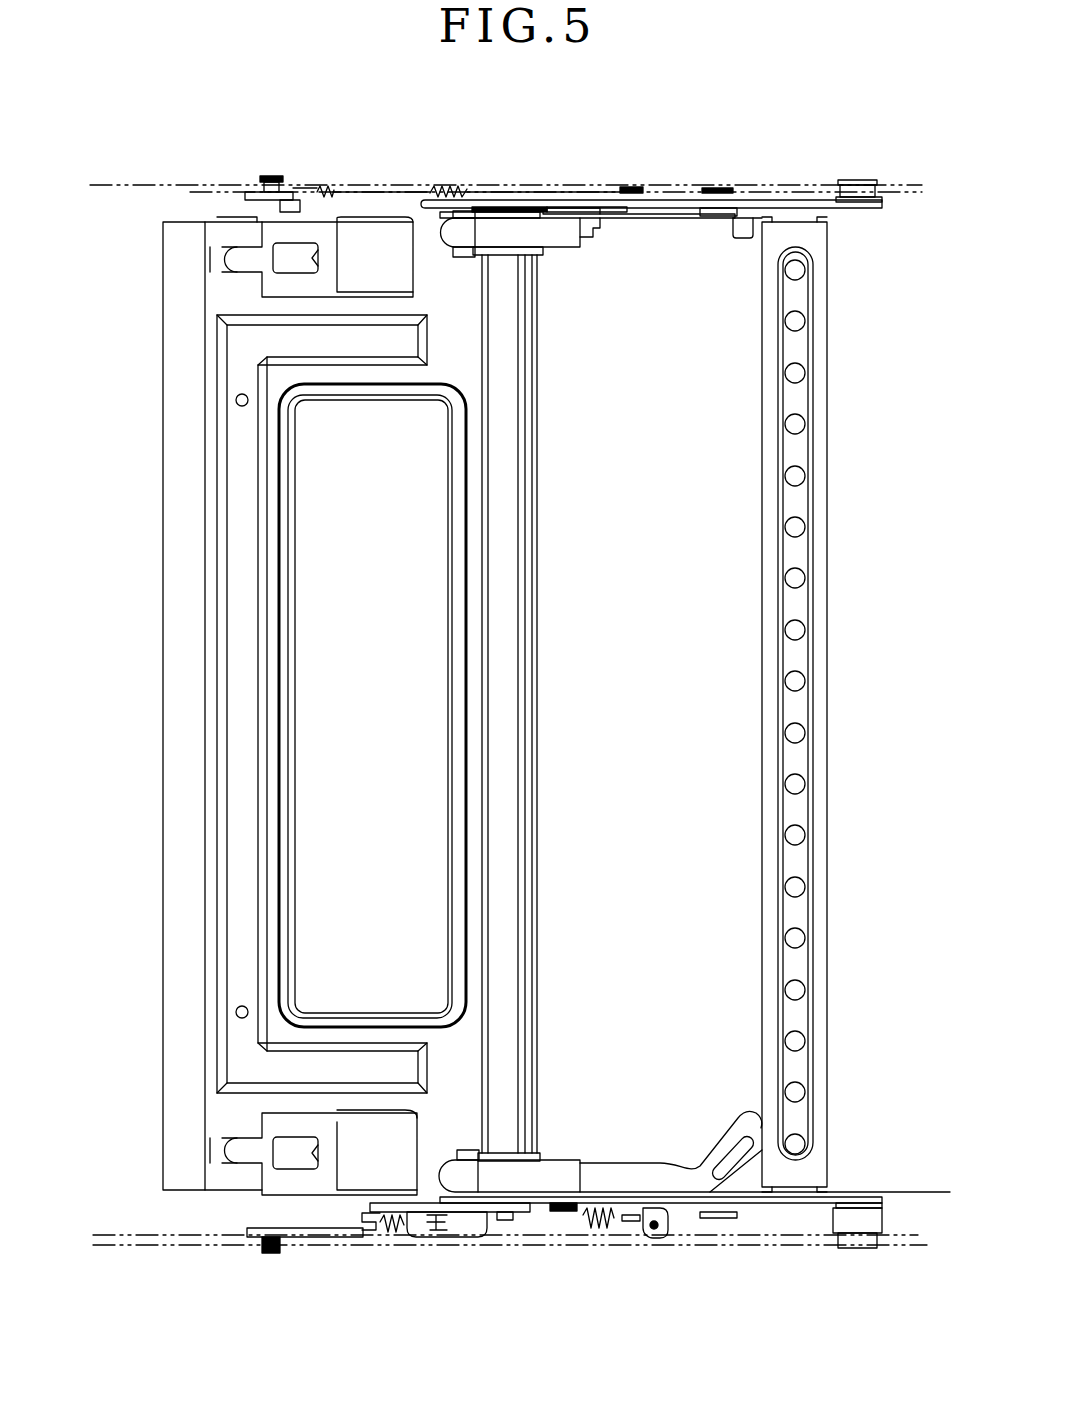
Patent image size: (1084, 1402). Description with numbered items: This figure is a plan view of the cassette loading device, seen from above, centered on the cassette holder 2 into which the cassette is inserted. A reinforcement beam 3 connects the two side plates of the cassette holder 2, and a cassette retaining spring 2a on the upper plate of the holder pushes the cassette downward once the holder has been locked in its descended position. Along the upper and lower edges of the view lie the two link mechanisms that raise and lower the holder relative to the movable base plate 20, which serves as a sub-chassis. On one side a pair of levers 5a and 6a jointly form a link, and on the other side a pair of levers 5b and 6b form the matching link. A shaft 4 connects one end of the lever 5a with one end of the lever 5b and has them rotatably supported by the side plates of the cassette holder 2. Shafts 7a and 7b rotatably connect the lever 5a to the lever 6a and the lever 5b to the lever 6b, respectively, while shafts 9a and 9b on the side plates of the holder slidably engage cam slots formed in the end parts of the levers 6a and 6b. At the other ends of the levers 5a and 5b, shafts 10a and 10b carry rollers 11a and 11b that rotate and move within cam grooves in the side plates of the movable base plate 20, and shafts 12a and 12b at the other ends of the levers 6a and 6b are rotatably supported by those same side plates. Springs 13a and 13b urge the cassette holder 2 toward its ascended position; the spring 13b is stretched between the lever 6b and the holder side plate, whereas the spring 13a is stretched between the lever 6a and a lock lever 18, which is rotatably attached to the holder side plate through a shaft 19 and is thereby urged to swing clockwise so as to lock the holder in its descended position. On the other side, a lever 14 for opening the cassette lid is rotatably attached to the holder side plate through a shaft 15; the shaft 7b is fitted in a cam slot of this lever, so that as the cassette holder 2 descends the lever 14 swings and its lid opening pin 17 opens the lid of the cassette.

The cassette holder 2 is at (185, 511).
The cassette retaining spring 2a is at (232, 258).
The reinforcement beam 3 is at (818, 631).
The shaft 4 is at (503, 590).
The lever 5a is at (607, 1196).
The lever 5b is at (630, 219).
The lever 6a is at (572, 1212).
The lever 6b is at (567, 198).
The shaft 7a is at (633, 1220).
The shaft 7b is at (628, 186).
The shaft 9a is at (722, 1219).
The shaft 9b is at (716, 187).
The shaft 10a is at (868, 1248).
The shaft 10b is at (868, 180).
The roller 11a is at (856, 1244).
The roller 11b is at (852, 186).
The shaft 12a is at (274, 1253).
The shaft 12b is at (272, 176).
The spring 13a is at (584, 1215).
The spring 13b is at (447, 186).
The lever 14 is at (515, 200).
The shaft 15 is at (438, 219).
The lid opening pin 17 is at (742, 236).
The lock lever 18 is at (385, 1237).
The shaft 19 is at (437, 1230).
The movable base plate 20 is at (131, 183).